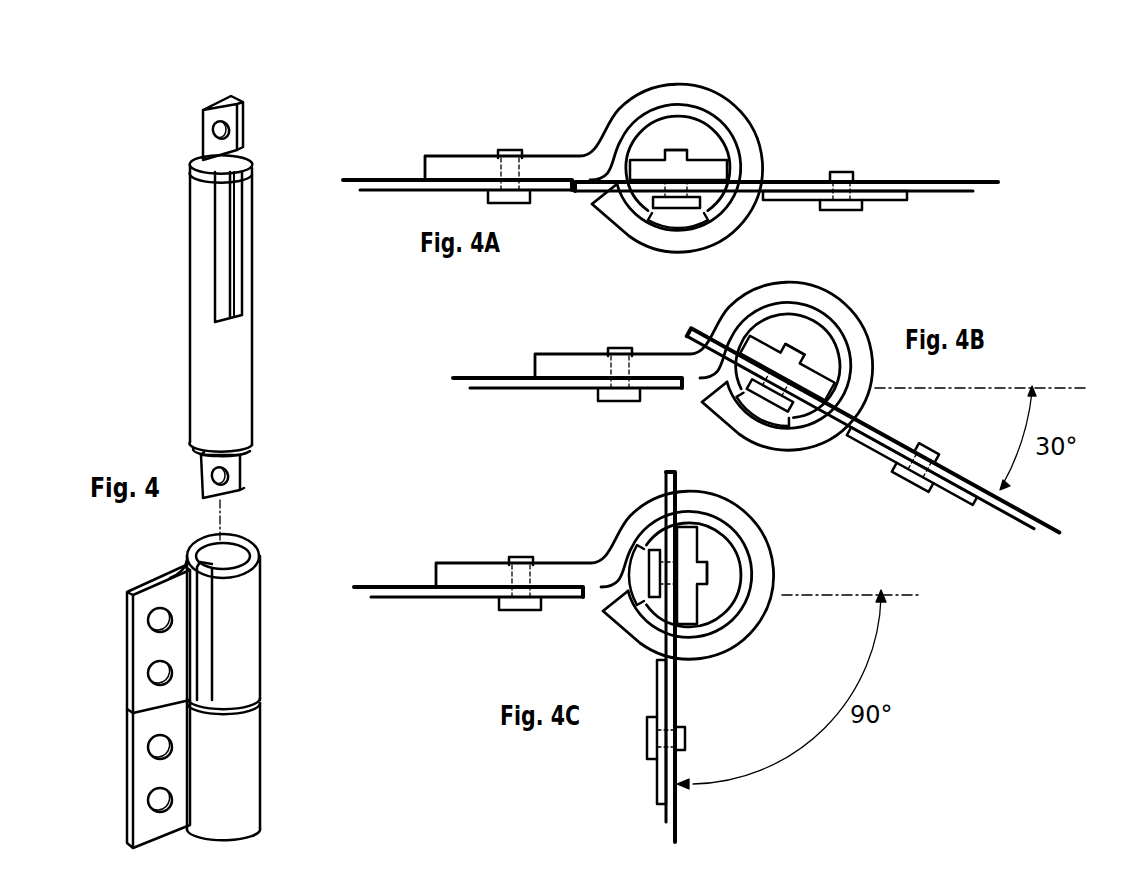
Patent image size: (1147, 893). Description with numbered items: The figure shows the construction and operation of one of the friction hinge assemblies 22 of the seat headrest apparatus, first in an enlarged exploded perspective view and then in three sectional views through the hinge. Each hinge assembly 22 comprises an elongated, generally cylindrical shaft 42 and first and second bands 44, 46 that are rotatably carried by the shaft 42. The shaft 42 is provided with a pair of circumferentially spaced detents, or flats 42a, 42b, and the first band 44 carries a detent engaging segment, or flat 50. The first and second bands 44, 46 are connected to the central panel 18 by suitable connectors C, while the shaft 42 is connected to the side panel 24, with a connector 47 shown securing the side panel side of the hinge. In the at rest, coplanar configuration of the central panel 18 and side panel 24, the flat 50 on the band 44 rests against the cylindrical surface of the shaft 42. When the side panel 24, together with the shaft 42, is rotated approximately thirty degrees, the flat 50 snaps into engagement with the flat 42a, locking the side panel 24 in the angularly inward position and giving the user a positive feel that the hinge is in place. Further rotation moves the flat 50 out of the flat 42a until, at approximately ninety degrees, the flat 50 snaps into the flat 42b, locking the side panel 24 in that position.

In FIG. 4A, the central panel 18 is at (375, 180).
In FIG. 4B, the central panel 18 is at (487, 375).
In FIG. 4C, the central panel 18 is at (395, 585).
In FIG. 4, the friction hinge assembly 22 is at (272, 490).
In FIG. 4A, the friction hinge assembly 22 is at (610, 96).
In FIG. 4B, the friction hinge assembly 22 is at (838, 285).
In FIG. 4C, the friction hinge assembly 22 is at (607, 509).
In FIG. 4A, the side panel 24 is at (890, 180).
In FIG. 4B, the side panel 24 is at (1020, 498).
In FIG. 4C, the side panel 24 is at (678, 808).
In FIG. 4, the shaft 42 is at (200, 352).
In FIG. 4A, the shaft 42 is at (748, 125).
In FIG. 4B, the shaft 42 is at (845, 365).
In FIG. 4C, the shaft 42 is at (693, 575).
In FIG. 4, the detent or flat 42a is at (215, 220).
In FIG. 4A, the detent or flat 42a is at (655, 233).
In FIG. 4B, the detent or flat 42a is at (738, 408).
In FIG. 4C, the detent or flat 42a is at (625, 540).
In FIG. 4, the detent or flat 42b is at (247, 226).
In FIG. 4A, the detent or flat 42b is at (738, 218).
In FIG. 4B, the detent or flat 42b is at (797, 430).
In FIG. 4C, the detent or flat 42b is at (633, 612).
In FIG. 4, the first band 44 is at (248, 630).
In FIG. 4A, the first band 44 is at (748, 152).
In FIG. 4B, the first band 44 is at (740, 303).
In FIG. 4C, the first band 44 is at (600, 528).
In FIG. 4, the second band 46 is at (240, 763).
In FIG. 4A, the second band 46 is at (835, 195).
In FIG. 4B, the second band 46 is at (912, 466).
In FIG. 4C, the second band 46 is at (661, 732).
In FIG. 4A, the fastener 47 is at (843, 208).
In FIG. 4B, the fastener 47 is at (905, 480).
In FIG. 4C, the fastener 47 is at (640, 738).
In FIG. 4, the detent engaging segment or flat 50 is at (212, 570).
In FIG. 4A, the detent engaging segment or flat 50 is at (622, 193).
In FIG. 4B, the detent engaging segment or flat 50 is at (748, 380).
In FIG. 4C, the detent engaging segment or flat 50 is at (665, 598).
In FIG. 4A, the connector C is at (513, 205).
In FIG. 4B, the connector C is at (622, 400).
In FIG. 4C, the connector C is at (520, 607).